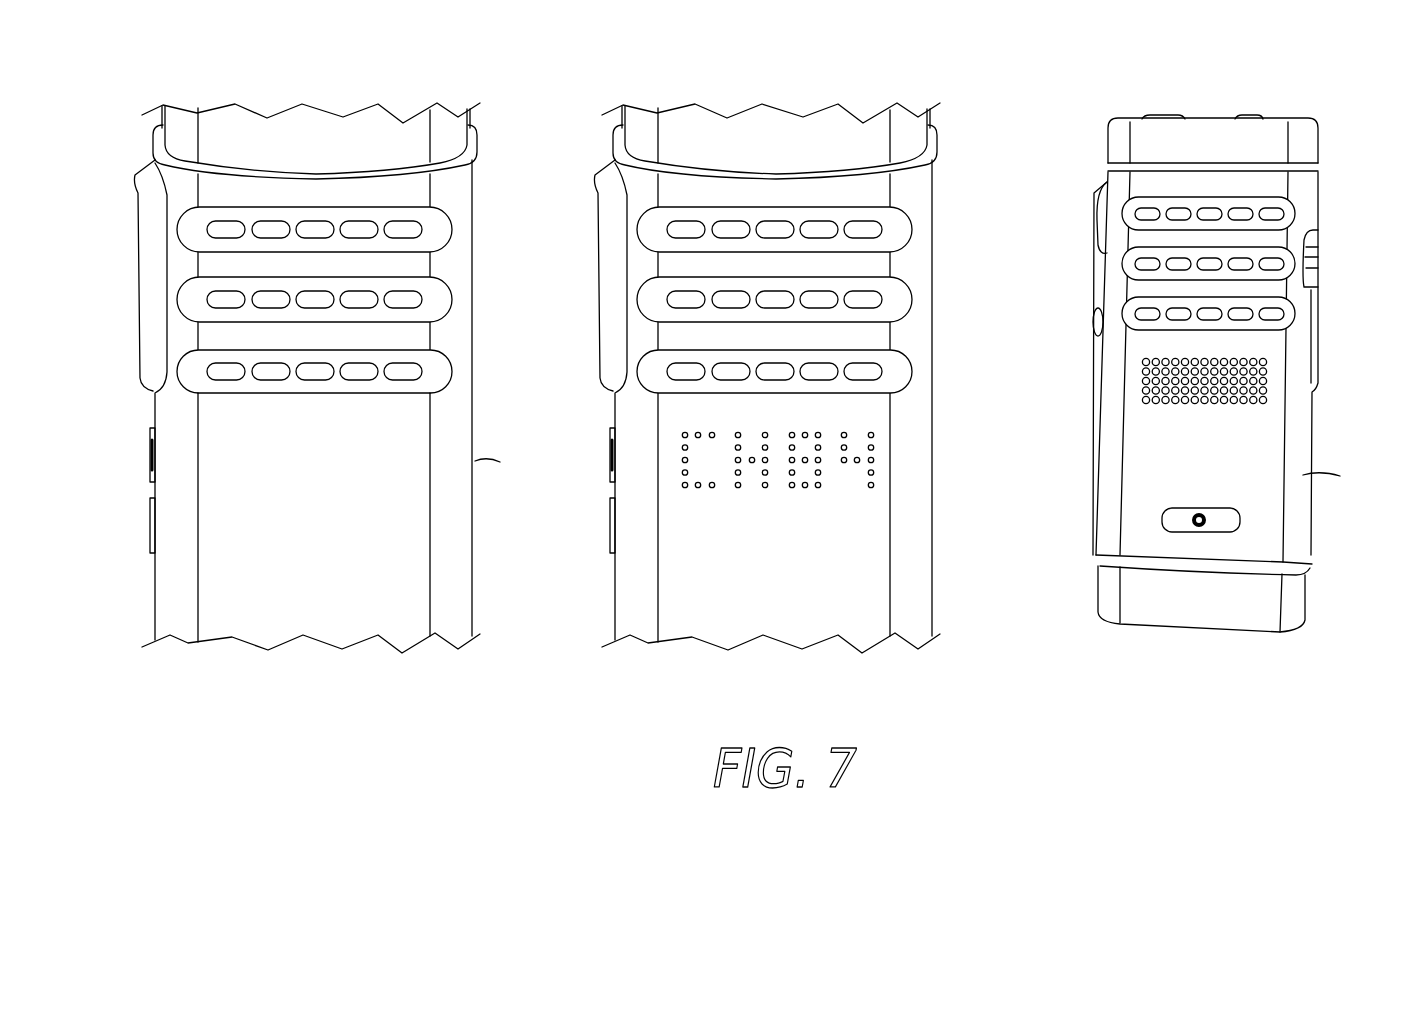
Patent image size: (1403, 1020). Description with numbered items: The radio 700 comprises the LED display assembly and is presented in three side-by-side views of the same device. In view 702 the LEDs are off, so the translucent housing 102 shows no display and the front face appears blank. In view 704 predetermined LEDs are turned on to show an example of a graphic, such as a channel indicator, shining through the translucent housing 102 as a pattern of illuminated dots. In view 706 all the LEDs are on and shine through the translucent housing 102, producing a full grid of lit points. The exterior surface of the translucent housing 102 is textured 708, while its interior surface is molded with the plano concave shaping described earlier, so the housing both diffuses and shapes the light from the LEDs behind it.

The set of views of the communication device 700 is at (740, 411).
The translucent housing 102 is at (755, 378).
The view 702 is at (874, 460).
The view 704 is at (1266, 380).
The view 706 is at (1220, 692).
The textured exterior surface 708 is at (235, 456).